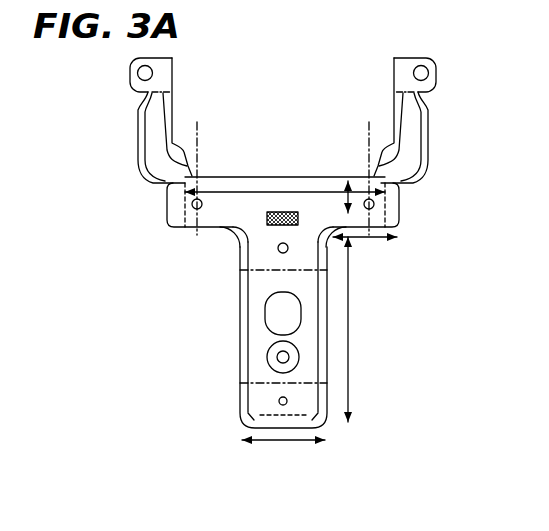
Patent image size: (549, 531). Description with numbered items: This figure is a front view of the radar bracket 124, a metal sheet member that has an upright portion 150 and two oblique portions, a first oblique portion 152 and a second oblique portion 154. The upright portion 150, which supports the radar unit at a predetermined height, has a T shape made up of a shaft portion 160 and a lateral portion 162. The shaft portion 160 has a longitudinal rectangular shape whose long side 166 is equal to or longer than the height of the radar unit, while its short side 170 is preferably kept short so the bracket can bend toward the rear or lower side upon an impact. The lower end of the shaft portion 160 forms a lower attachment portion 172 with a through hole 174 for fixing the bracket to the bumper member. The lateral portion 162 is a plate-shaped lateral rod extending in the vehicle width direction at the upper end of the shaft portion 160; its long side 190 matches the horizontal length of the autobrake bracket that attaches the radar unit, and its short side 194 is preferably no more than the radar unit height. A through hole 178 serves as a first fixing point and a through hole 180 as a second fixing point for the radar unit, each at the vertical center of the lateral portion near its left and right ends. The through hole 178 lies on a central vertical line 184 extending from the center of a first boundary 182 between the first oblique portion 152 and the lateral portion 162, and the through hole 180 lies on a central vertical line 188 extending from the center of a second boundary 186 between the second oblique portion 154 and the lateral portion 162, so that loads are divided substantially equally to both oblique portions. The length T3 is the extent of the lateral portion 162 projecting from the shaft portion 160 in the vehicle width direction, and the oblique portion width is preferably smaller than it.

The radar bracket 124 is at (441, 139).
The upright portion 150 is at (427, 187).
The first oblique portion 152 is at (410, 128).
The second oblique portion 154 is at (156, 126).
The shaft portion 160 is at (262, 328).
The lateral portion 162 is at (218, 202).
The long side 166 is at (348, 328).
The short side 170 is at (280, 440).
The lower attachment portion 172 is at (236, 385).
The through hole 174 is at (288, 402).
The through hole 178 is at (376, 203).
The through hole 180 is at (183, 197).
The first boundary 182 is at (395, 180).
The central vertical line 184 is at (369, 143).
The second boundary 186 is at (182, 182).
The central vertical line 188 is at (197, 143).
The long side 190 is at (256, 190).
The short side 194 is at (352, 200).
The length T3 is at (380, 238).